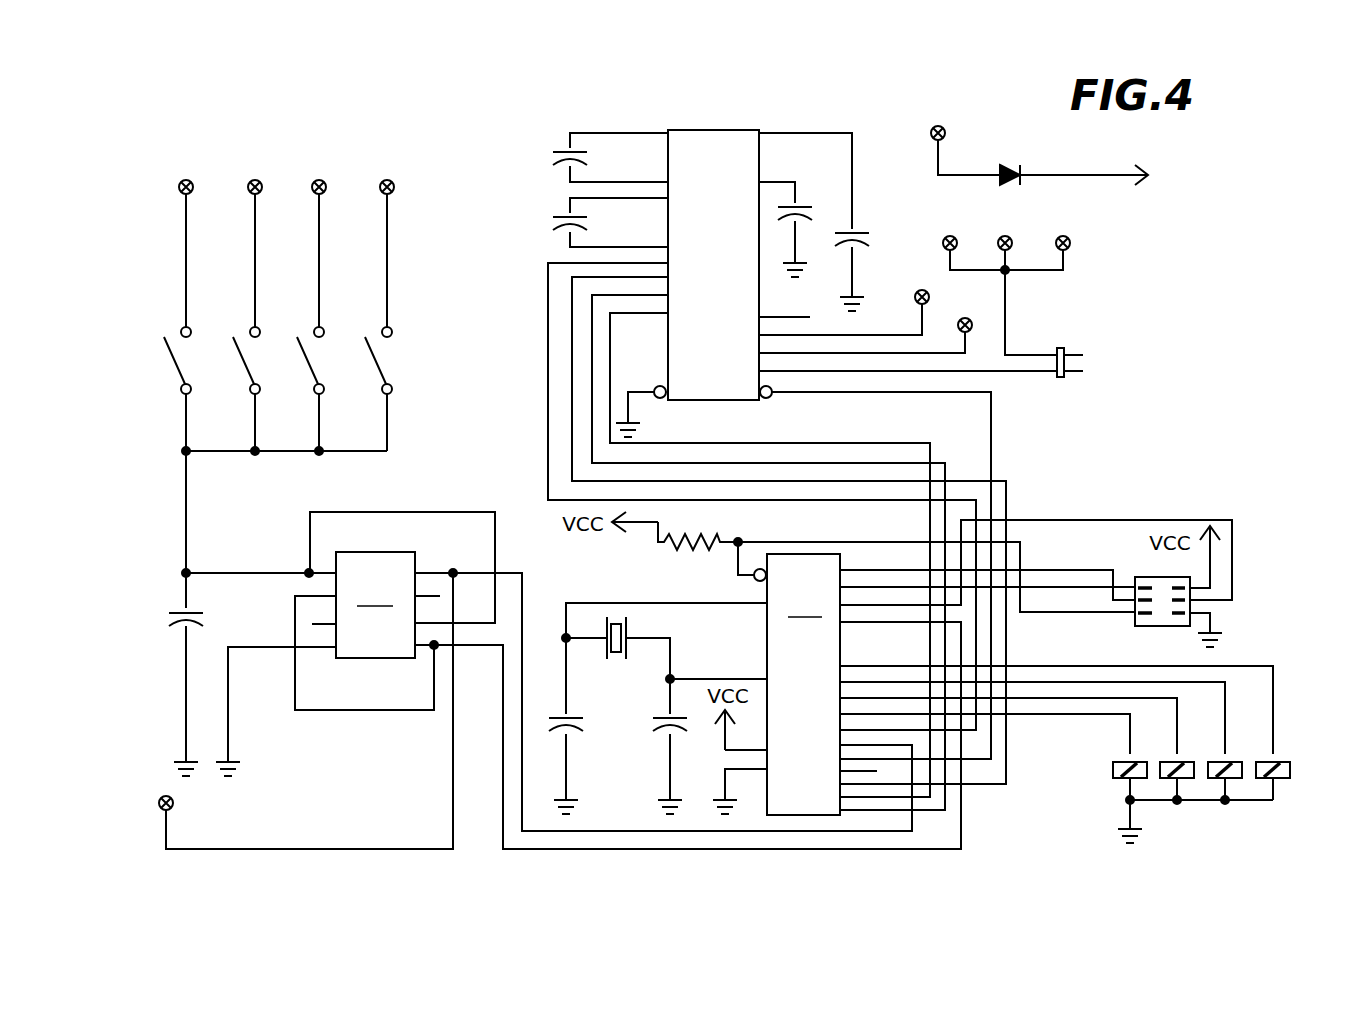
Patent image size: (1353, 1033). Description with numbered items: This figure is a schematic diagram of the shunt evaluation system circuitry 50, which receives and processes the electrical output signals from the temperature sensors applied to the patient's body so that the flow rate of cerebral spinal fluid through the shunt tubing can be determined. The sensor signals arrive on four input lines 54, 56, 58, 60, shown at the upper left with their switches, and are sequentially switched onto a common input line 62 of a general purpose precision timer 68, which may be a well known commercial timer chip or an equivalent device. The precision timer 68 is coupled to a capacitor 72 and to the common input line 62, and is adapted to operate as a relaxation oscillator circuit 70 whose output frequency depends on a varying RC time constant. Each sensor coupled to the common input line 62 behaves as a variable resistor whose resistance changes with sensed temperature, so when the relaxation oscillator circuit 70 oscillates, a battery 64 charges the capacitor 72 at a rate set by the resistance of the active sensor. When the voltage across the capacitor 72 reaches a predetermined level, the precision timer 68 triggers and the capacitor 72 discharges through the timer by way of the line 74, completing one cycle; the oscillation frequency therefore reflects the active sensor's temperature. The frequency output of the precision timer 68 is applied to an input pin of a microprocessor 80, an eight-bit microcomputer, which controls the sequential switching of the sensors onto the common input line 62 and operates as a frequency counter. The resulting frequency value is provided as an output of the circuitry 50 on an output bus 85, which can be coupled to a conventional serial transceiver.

The shunt evaluation system circuitry 50 is at (1145, 292).
The input line 54 is at (185, 180).
The input line 56 is at (254, 180).
The input line 58 is at (318, 180).
The input line 60 is at (386, 180).
The common input line 62 is at (186, 500).
The battery 64 is at (946, 128).
The precision timer 68 is at (375, 605).
The relaxation oscillator circuit 70 is at (292, 556).
The capacitor 72 is at (186, 593).
The line 74 is at (450, 512).
The microprocessor 80 is at (803, 684).
The output bus 85 is at (792, 127).